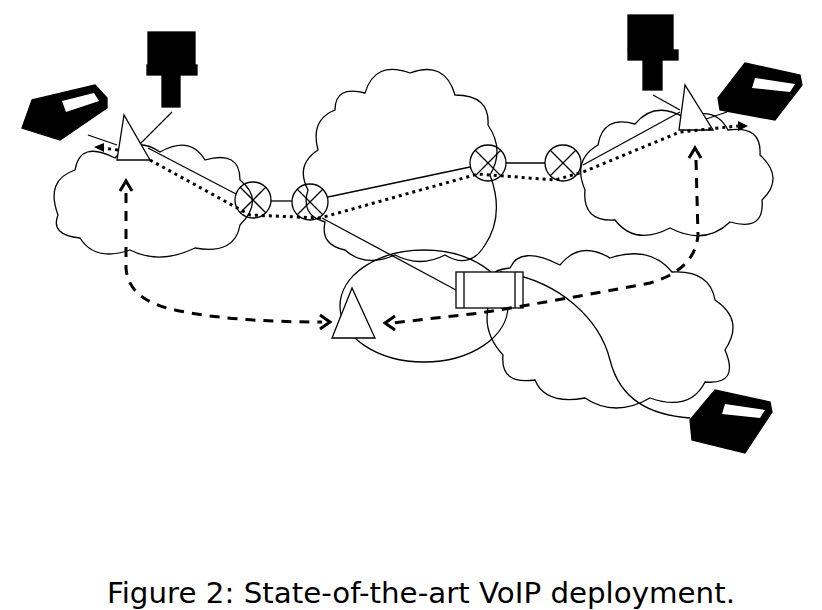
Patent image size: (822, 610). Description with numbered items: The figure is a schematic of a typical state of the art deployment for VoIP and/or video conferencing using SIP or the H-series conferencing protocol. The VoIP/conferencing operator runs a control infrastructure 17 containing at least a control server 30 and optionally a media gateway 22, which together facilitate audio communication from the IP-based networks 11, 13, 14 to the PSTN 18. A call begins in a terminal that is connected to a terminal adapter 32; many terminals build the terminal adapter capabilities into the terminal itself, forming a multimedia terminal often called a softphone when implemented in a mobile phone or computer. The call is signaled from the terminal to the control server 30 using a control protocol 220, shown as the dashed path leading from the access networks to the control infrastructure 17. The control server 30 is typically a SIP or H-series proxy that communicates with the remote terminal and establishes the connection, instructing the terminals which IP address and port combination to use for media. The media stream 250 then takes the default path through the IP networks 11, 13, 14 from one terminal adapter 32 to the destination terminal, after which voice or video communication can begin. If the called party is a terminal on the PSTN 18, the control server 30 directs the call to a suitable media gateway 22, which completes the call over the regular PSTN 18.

The IP-based network 11 is at (400, 165).
The IP-based network 13 is at (153, 201).
The IP-based network 14 is at (677, 172).
The control infrastructure 17 is at (424, 306).
The PSTN 18 is at (610, 334).
The media gateway 22 is at (489, 290).
The control server 30 is at (353, 313).
The terminal adapter 32 is at (415, 122).
The control protocol 220 is at (424, 239).
The media stream 250 is at (277, 230).